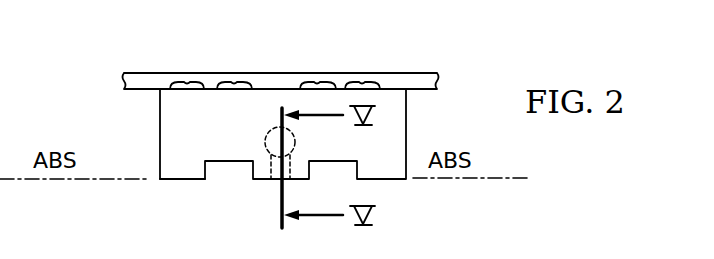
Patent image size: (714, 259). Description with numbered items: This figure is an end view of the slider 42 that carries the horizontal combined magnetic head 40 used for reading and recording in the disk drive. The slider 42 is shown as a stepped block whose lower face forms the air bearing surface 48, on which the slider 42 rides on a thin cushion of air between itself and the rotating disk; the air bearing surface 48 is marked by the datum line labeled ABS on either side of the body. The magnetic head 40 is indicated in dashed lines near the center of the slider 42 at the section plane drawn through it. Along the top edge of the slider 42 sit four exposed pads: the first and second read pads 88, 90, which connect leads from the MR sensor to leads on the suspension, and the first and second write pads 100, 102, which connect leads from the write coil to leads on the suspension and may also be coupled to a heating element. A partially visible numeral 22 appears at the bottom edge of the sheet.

The slider 42 is at (160, 121).
The air bearing surface 48 is at (184, 181).
The first read pad 88 is at (186, 83).
The first write pad 100 is at (232, 83).
The second write pad 102 is at (315, 83).
The second read pad 90 is at (360, 83).
The horizontal combined magnetic head 40 is at (262, 181).
The base 22 is at (569, 254).